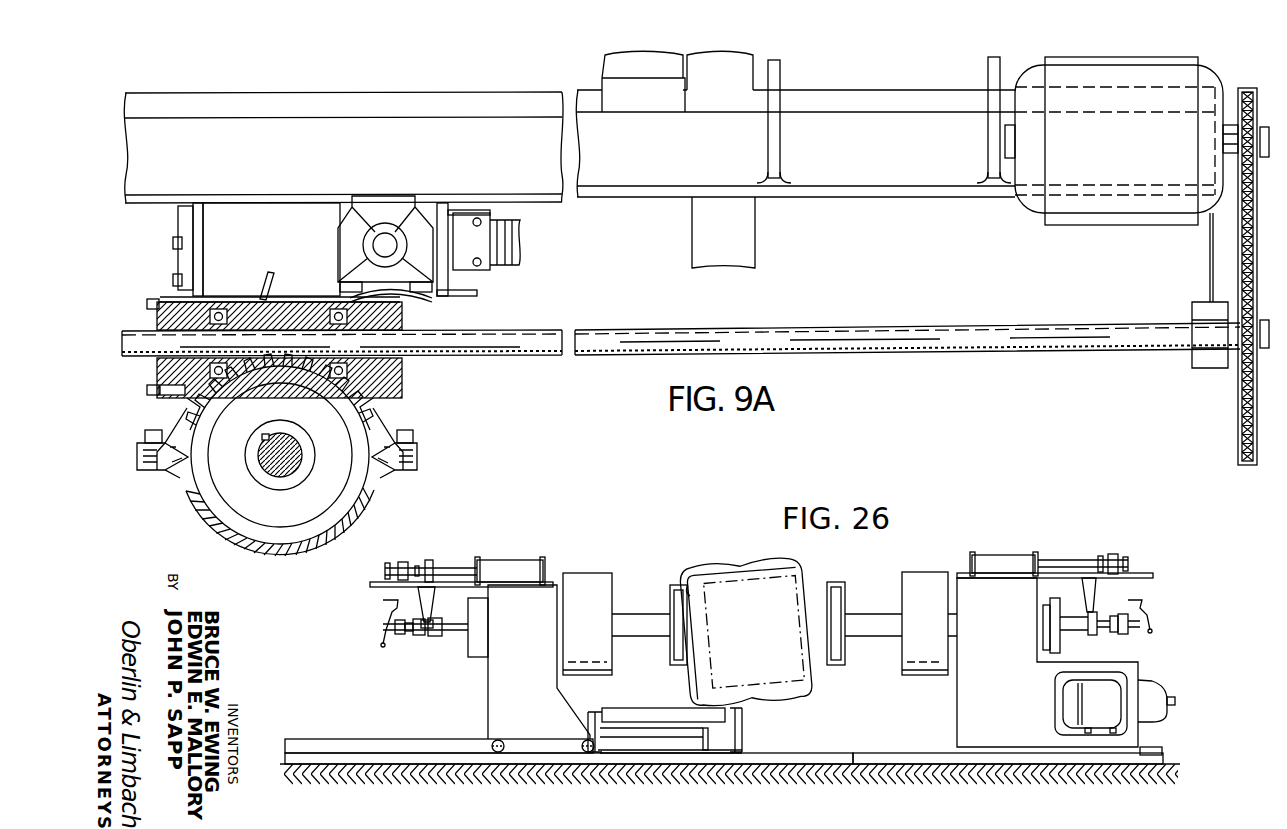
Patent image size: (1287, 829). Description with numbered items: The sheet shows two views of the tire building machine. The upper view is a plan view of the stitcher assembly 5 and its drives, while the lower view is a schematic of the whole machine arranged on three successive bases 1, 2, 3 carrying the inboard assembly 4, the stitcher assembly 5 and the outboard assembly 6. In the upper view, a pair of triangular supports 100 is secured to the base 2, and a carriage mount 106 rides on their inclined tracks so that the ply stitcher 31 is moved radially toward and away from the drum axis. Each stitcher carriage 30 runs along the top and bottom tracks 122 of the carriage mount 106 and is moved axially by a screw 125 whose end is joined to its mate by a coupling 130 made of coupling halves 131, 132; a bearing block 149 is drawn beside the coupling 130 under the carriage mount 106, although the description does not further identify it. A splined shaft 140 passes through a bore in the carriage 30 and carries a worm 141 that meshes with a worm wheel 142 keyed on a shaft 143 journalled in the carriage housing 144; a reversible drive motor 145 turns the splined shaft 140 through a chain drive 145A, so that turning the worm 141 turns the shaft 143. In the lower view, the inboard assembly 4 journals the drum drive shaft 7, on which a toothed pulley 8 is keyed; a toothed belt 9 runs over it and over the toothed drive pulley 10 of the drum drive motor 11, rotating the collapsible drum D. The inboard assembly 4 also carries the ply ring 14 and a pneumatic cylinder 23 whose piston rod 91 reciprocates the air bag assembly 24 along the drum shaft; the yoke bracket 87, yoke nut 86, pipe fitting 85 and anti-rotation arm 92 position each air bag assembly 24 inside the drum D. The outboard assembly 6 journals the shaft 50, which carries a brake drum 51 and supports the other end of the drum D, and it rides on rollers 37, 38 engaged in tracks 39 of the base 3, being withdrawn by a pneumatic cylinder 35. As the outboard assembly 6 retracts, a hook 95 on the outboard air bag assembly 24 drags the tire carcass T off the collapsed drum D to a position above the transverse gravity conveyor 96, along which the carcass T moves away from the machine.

In FIG. 9A, the top and bottom tracks 122 is at (162, 127).
In FIG. 9A, the carriage mount 106 is at (258, 94).
In FIG. 9A, the stitcher assembly 5 is at (357, 87).
In FIG. 9A, the stitcher carriage 30 is at (243, 220).
In FIG. 9A, the pillow block bearing 149 is at (345, 245).
In FIG. 9A, the coupling 130 is at (450, 206).
In FIG. 9A, the coupling half 132 is at (478, 220).
In FIG. 9A, the screw 125 is at (508, 268).
In FIG. 9A, the coupling half 131 is at (438, 263).
In FIG. 9A, the worm 141 is at (253, 299).
In FIG. 9A, the ply stitcher 31 is at (268, 291).
In FIG. 9A, the splined shaft 140 is at (141, 359).
In FIG. 9A, the shaft 143 is at (272, 472).
In FIG. 9A, the worm wheel 142 is at (348, 405).
In FIG. 9A, the carriage housing 144 is at (196, 507).
In FIG. 9A, the triangular supports 100 is at (746, 62).
In FIG. 9A, the reversible drive motor 145 is at (1038, 210).
In FIG. 9A, the chain drive 145A is at (1248, 413).
In FIG. 26, the tracks 39 is at (393, 739).
In FIG. 26, the base 2 is at (787, 759).
In FIG. 26, the base 1 is at (1040, 759).
In FIG. 26, the base 3 is at (542, 760).
In FIG. 26, the roller 37 is at (495, 757).
In FIG. 26, the roller 38 is at (588, 757).
In FIG. 26, the outboard assembly 6 is at (480, 683).
In FIG. 26, the brake drum 51 is at (470, 655).
In FIG. 26, the pneumatic cylinder 23 is at (516, 559).
In FIG. 26, the piston rod 91 is at (440, 565).
In FIG. 26, the yoke bracket 87 is at (431, 597).
In FIG. 26, the pipe fitting 85 is at (380, 632).
In FIG. 26, the yoke nut 86 is at (420, 636).
In FIG. 26, the arm 92 is at (387, 616).
In FIG. 26, the ply ring 14 is at (587, 576).
In FIG. 26, the shaft 50 is at (626, 628).
In FIG. 26, the drum drive shaft 7 is at (862, 626).
In FIG. 26, the air bag assembly 24 is at (668, 578).
In FIG. 26, the tire carcass T is at (722, 566).
In FIG. 26, the collapsible drum D is at (806, 586).
In FIG. 26, the hook 95 is at (694, 589).
In FIG. 26, the transverse gravity conveyor 96 is at (653, 710).
In FIG. 26, the pneumatic cylinder 35 is at (641, 742).
In FIG. 26, the inboard assembly 4 is at (946, 704).
In FIG. 26, the toothed pulley 8 is at (1062, 640).
In FIG. 26, the toothed belt 9 is at (1053, 653).
In FIG. 26, the toothed drive pulley 10 is at (1058, 709).
In FIG. 26, the drum drive motor 11 is at (1151, 690).